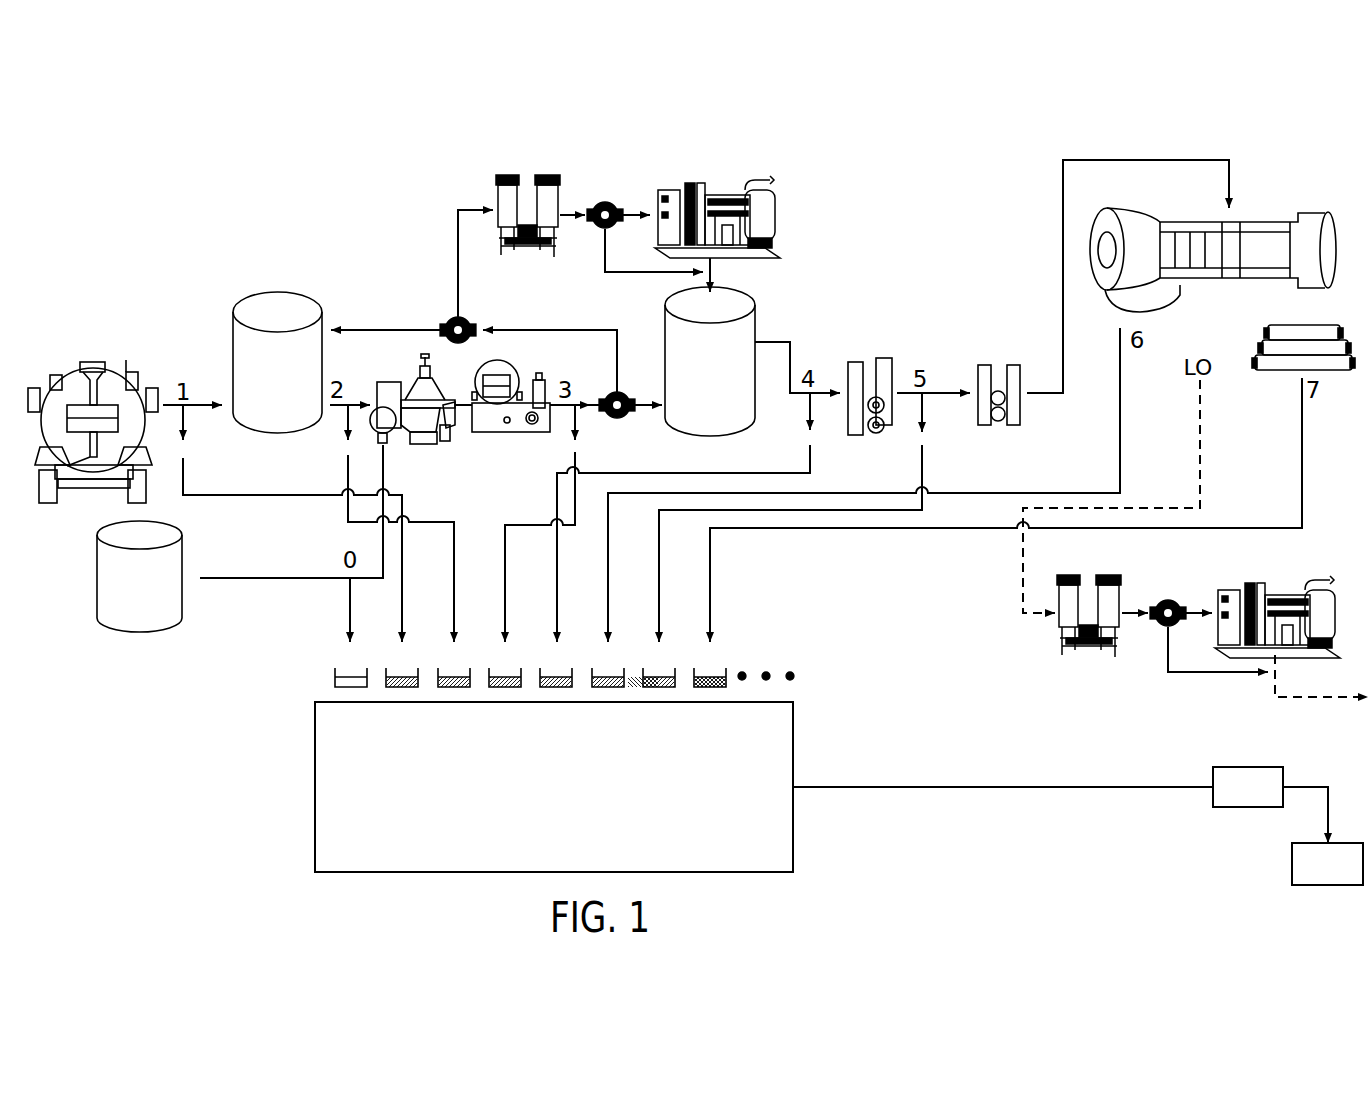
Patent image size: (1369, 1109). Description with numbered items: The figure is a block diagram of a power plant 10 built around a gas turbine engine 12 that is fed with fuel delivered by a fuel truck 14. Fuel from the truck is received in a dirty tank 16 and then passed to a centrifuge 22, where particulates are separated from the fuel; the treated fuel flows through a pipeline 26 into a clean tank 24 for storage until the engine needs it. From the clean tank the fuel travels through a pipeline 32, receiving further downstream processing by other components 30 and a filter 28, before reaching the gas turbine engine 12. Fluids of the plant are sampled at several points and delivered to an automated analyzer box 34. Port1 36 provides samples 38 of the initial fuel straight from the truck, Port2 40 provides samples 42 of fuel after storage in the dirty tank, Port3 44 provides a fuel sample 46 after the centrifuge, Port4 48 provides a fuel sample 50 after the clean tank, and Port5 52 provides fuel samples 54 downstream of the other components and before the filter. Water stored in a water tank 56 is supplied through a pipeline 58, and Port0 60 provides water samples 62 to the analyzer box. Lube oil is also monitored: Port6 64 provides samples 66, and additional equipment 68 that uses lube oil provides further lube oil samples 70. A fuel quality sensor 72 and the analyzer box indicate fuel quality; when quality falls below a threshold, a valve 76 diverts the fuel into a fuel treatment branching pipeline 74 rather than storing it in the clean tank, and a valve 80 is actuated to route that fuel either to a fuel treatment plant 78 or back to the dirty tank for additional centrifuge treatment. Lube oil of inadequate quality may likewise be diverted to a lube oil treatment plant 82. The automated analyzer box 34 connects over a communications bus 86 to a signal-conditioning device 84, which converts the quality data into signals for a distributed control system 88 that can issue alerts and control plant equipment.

The power plant 10 is at (1015, 142).
The gas turbine engine 12 is at (1262, 222).
The fuel truck 14 is at (92, 322).
The dirty tank 16 is at (276, 300).
The centrifuge 22 is at (402, 385).
The clean tank 24 is at (725, 305).
The pipeline 26 is at (648, 396).
The filter 28 is at (988, 362).
The other components 30 is at (890, 356).
The pipeline 32 is at (778, 340).
The automated analyzer box 34 is at (795, 735).
The Port1 36 is at (185, 430).
The samples 38 is at (396, 658).
The Port2 40 is at (342, 428).
The samples 42 is at (446, 658).
The Port3 44 is at (572, 388).
The fuel sample 46 is at (498, 658).
The Port4 48 is at (810, 366).
The fuel sample 50 is at (550, 658).
The Port5 52 is at (922, 365).
The fuel samples 54 is at (601, 658).
The water tank 56 is at (178, 530).
The pipeline 58 is at (280, 576).
The Port0 60 is at (348, 548).
The water samples 62 is at (345, 660).
The Port6 64 is at (1150, 338).
The samples 66 is at (652, 658).
The additional equipment 68 is at (1305, 325).
The lube oil samples 70 is at (704, 658).
The fuel quality sensor 72 is at (505, 363).
The fuel treatment branching pipeline 74 is at (585, 312).
The valve 76 is at (612, 420).
The fuel treatment plant 78 is at (778, 208).
The valve 80 is at (452, 320).
The lube oil treatment plant 82 is at (1305, 655).
The signal-conditioning device 84 is at (1250, 767).
The communications bus 86 is at (995, 755).
The distributed control system 88 is at (1292, 865).